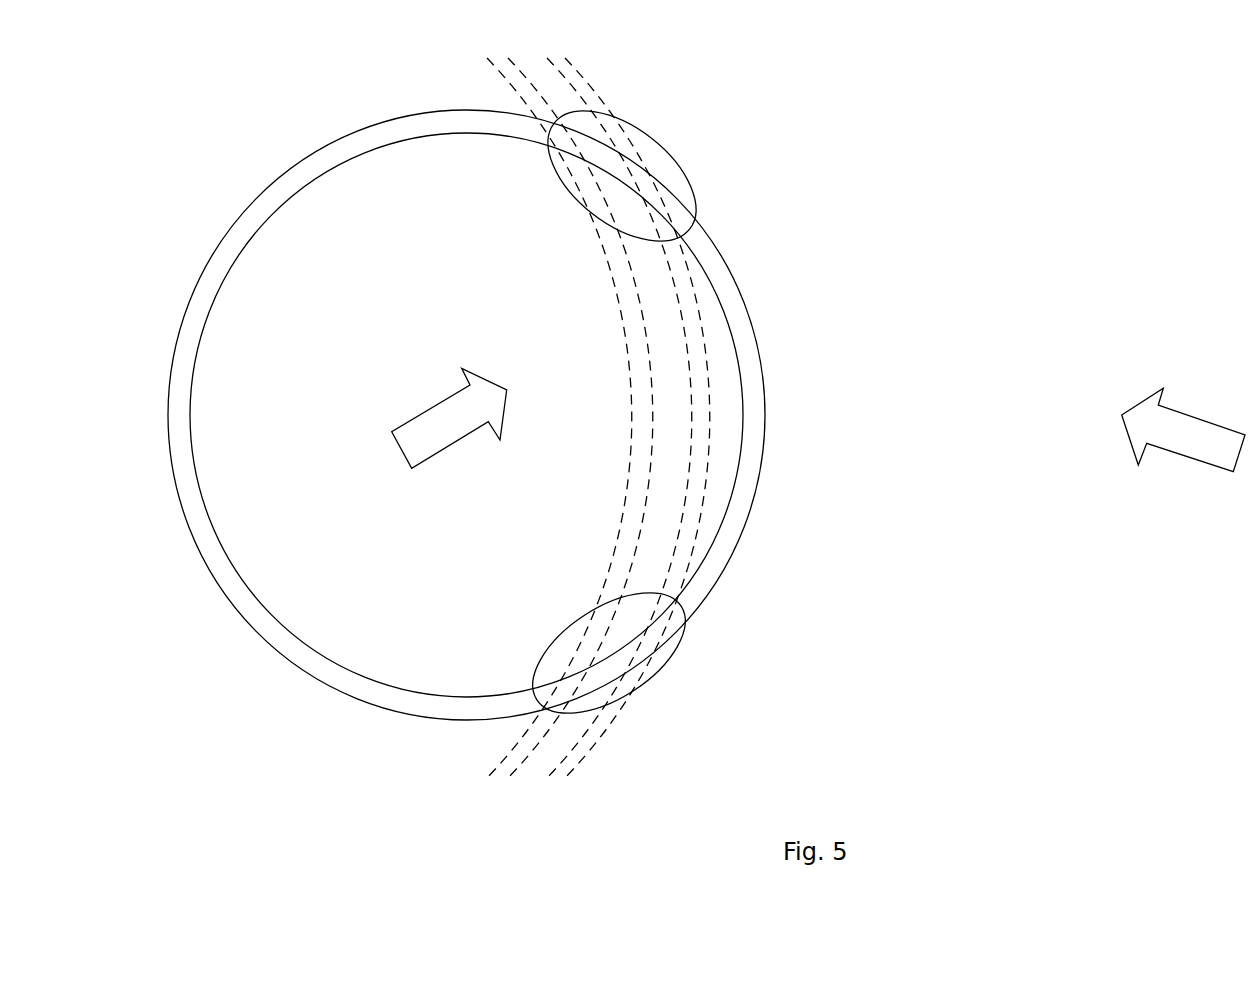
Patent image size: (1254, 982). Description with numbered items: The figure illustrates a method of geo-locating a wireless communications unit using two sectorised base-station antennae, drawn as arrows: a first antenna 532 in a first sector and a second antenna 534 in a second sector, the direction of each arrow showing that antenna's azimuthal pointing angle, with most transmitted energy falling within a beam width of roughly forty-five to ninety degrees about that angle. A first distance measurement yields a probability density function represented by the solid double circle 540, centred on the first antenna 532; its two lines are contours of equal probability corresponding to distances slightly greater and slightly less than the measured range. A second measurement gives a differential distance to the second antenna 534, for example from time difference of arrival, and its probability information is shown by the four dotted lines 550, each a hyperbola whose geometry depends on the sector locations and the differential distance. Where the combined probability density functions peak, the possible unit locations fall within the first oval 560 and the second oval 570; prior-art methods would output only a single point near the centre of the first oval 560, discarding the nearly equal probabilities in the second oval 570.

The first antenna 532 is at (448, 399).
The second antenna 534 is at (1175, 410).
The double circle 540 is at (748, 318).
The four dotted lines 550 is at (488, 778).
The first oval 560 is at (670, 167).
The second oval 570 is at (675, 645).